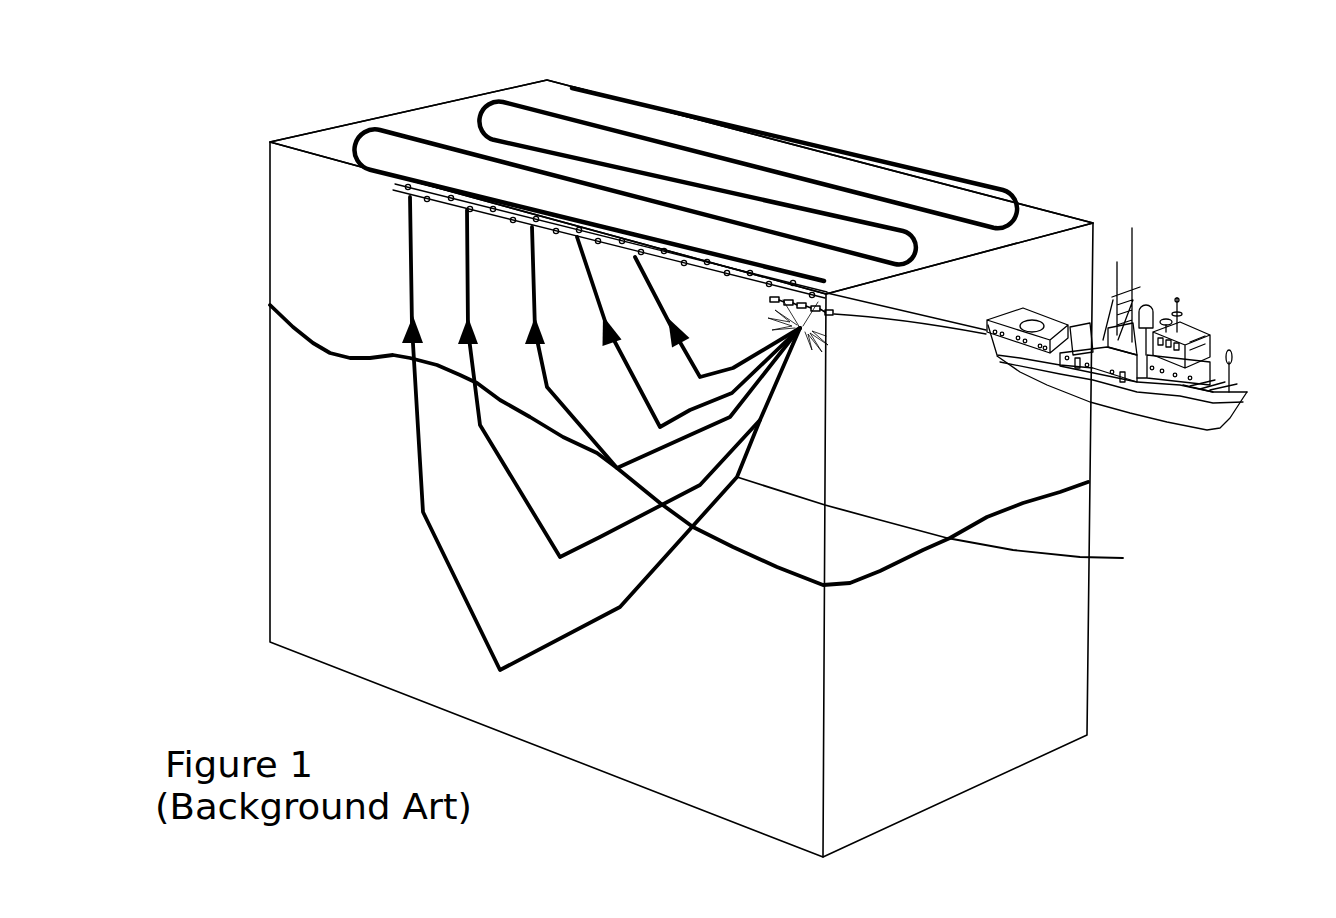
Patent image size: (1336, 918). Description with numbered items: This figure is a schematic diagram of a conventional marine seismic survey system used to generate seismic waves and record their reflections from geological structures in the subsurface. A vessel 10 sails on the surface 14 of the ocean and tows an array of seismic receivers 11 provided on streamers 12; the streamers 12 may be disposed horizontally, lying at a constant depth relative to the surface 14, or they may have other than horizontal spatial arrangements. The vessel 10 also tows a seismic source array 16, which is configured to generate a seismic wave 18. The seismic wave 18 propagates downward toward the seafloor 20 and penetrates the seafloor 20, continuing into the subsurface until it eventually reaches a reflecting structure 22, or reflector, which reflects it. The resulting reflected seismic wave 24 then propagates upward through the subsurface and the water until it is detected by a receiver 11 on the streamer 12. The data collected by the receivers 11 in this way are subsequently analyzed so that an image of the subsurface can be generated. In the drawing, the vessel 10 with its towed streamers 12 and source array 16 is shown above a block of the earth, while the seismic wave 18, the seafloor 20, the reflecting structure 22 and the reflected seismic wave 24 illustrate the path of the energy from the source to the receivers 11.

The vessel 10 is at (1210, 323).
The seismic receivers 11 is at (543, 220).
The streamers 12 is at (602, 226).
The surface of the ocean 14 is at (443, 118).
The seismic source array 16 is at (826, 292).
The seismic wave 18 is at (1123, 558).
The seafloor 20 is at (1048, 487).
The reflecting structure 22 is at (330, 471).
The reflected seismic wave 24 is at (415, 405).